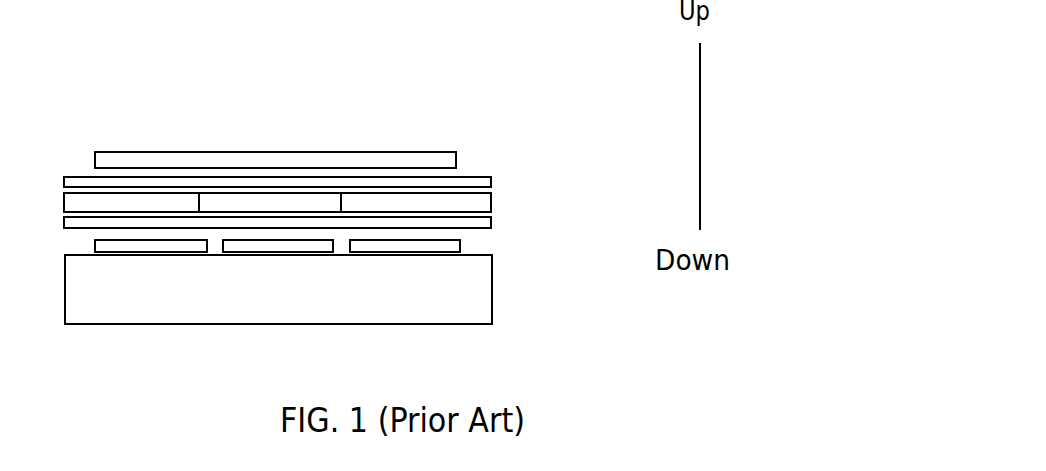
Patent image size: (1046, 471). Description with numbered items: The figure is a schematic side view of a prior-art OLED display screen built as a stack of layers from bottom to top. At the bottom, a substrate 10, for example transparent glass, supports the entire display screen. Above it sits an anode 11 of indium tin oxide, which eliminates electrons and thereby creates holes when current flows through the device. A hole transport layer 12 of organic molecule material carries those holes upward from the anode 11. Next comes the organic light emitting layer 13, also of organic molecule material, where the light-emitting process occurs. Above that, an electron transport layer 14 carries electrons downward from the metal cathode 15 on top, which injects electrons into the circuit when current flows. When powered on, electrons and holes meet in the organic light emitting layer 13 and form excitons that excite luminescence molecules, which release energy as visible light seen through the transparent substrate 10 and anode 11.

The substrate 10 is at (492, 300).
The anode 11 is at (460, 243).
The hole transport layer 12 is at (491, 223).
The organic light emitting layer 13 is at (491, 202).
The electron transport layer 14 is at (491, 180).
The cathode 15 is at (456, 160).